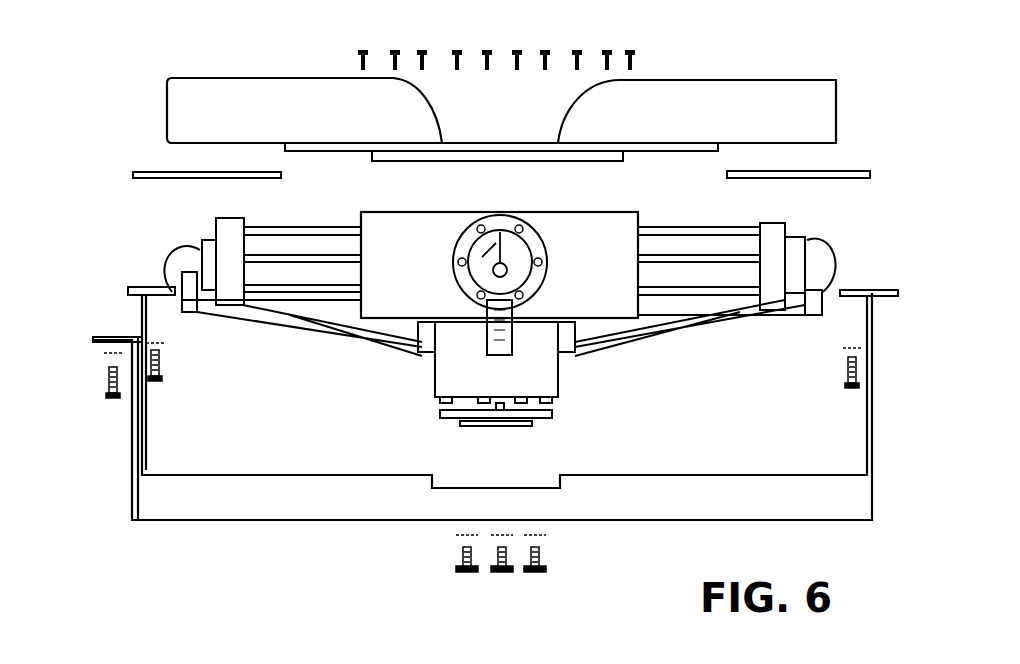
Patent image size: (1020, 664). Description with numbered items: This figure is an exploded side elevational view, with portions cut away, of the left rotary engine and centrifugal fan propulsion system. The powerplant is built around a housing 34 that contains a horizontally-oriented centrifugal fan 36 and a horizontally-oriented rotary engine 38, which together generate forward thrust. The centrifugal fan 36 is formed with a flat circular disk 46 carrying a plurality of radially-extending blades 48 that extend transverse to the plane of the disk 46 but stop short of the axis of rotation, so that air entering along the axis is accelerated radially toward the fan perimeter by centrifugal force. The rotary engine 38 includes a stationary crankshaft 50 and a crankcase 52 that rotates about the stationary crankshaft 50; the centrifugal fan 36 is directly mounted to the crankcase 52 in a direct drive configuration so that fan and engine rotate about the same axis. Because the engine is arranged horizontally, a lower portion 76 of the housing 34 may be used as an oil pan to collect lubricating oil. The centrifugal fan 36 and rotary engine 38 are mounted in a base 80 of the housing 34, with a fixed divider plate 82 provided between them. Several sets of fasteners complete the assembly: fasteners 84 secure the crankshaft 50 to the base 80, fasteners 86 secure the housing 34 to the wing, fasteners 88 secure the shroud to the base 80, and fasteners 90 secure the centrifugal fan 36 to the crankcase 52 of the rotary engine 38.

The housing 34 is at (143, 521).
The centrifugal fan 36 is at (833, 112).
The rotary engine 38 is at (645, 214).
The flat circular disk 46 is at (477, 143).
The radially-extending blades 48 is at (710, 80).
The stationary crankshaft 50 is at (508, 405).
The crankcase 52 is at (618, 310).
The lower portion 76 is at (322, 510).
The base 80 is at (228, 520).
The fixed divider plate 82 is at (868, 172).
The fasteners 84 is at (468, 572).
The fasteners 86 is at (112, 400).
The fasteners 88 is at (155, 382).
The fasteners 90 is at (637, 58).